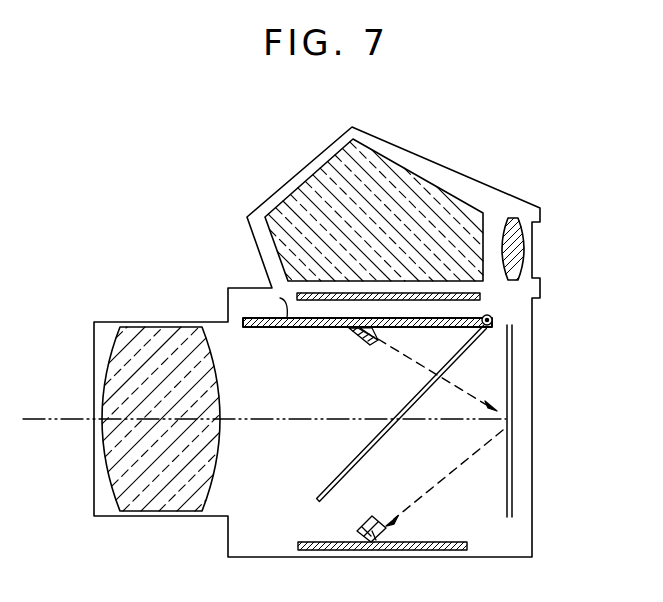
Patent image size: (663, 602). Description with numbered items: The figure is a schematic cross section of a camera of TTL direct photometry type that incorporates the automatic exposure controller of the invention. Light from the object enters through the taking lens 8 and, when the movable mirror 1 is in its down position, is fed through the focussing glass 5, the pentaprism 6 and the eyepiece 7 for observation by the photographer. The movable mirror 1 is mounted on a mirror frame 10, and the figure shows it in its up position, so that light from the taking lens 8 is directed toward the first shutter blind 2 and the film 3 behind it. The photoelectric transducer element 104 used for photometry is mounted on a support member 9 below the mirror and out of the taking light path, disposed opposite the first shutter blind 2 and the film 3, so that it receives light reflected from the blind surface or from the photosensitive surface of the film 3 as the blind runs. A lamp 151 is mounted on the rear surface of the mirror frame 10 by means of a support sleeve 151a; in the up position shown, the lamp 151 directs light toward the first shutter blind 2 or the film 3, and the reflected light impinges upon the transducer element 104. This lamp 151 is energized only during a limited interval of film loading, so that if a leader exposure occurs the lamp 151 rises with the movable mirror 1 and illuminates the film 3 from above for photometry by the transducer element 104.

The movable mirror 1 is at (279, 302).
The first shutter blind 2 is at (506, 494).
The film 3 is at (513, 477).
The focussing glass 5 is at (477, 297).
The pentaprism 6 is at (425, 183).
The eyepiece 7 is at (523, 243).
The taking lens 8 is at (203, 493).
The support member 9 is at (423, 542).
The mirror frame 10 is at (288, 327).
The photoelectric transducer element 104 is at (377, 522).
The lamp 151 is at (371, 343).
The support sleeve 151a is at (357, 337).